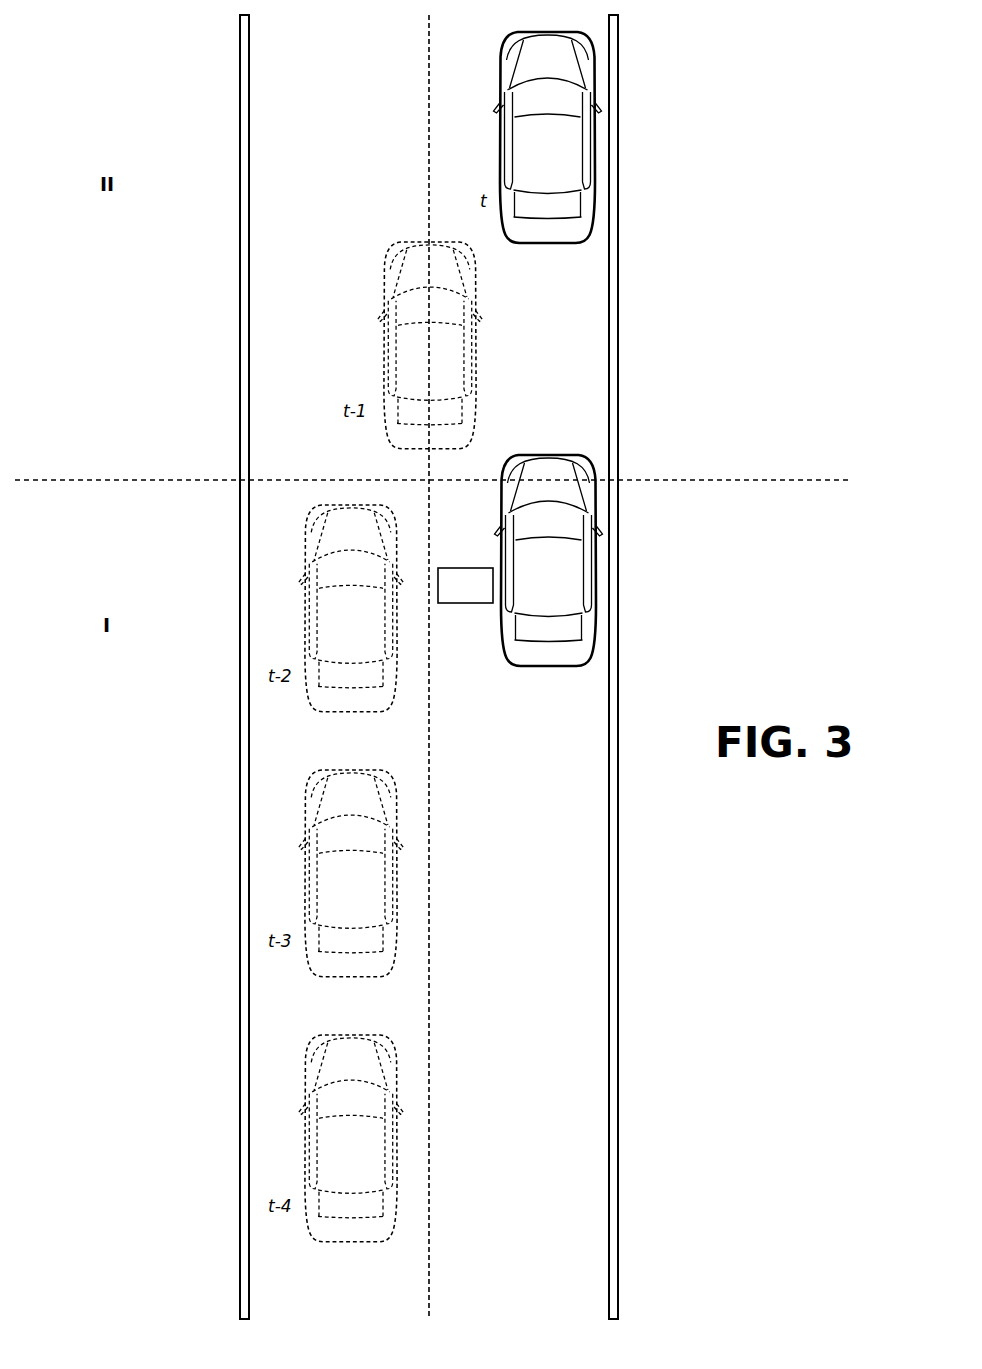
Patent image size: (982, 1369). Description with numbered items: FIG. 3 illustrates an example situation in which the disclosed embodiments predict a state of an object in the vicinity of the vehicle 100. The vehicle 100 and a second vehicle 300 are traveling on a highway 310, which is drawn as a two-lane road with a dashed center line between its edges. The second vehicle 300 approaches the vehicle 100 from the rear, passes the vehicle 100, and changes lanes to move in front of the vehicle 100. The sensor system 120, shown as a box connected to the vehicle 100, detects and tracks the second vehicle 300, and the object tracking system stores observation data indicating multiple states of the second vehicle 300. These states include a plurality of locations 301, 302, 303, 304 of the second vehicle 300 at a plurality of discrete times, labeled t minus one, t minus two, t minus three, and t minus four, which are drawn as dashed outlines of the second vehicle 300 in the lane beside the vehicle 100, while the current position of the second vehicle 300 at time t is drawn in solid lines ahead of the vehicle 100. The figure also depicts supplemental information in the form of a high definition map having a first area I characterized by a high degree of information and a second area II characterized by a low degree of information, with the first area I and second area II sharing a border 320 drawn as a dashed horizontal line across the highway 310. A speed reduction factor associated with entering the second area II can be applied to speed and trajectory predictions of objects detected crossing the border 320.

The vehicle 100 is at (593, 589).
The sensor system 120 is at (502, 623).
The second vehicle 300 is at (592, 166).
The location of the second vehicle 301 is at (382, 283).
The location of the second vehicle 302 is at (303, 603).
The location of the second vehicle 303 is at (303, 868).
The location of the second vehicle 304 is at (303, 1133).
The highway 310 is at (619, 995).
The border 320 is at (168, 478).